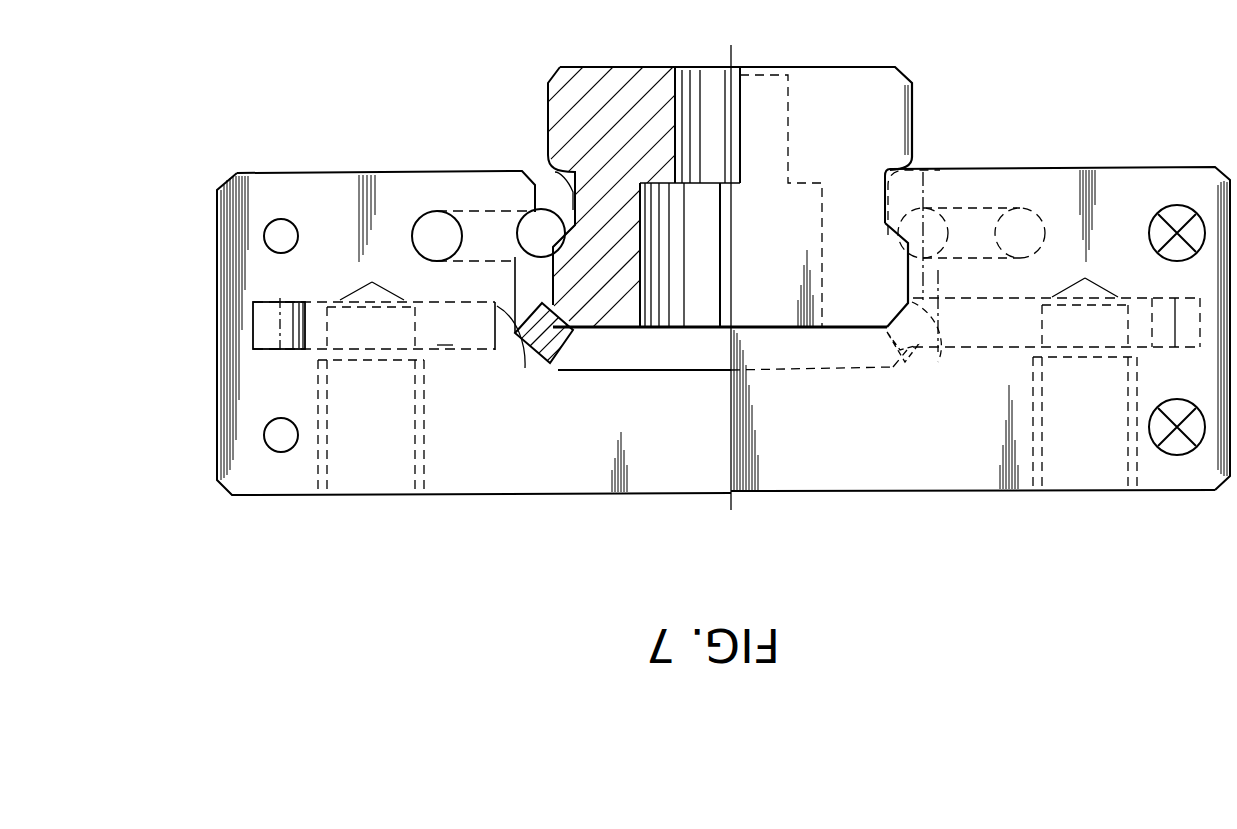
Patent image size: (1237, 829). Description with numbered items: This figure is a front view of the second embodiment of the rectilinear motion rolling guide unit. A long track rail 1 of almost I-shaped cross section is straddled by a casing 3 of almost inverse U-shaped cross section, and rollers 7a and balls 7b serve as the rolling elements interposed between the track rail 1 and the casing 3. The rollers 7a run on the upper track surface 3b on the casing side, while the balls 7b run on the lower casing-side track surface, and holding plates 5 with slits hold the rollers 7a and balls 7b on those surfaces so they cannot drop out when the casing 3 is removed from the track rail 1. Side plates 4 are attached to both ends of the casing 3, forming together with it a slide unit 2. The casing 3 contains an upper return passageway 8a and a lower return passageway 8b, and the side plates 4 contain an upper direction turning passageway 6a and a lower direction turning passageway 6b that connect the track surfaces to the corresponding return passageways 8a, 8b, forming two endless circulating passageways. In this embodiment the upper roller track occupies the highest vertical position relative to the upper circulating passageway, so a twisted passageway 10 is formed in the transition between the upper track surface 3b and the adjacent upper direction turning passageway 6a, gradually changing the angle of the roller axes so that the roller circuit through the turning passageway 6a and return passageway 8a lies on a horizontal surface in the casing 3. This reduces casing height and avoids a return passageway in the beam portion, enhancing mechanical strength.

The track rail 1 is at (862, 107).
The slide unit 2 is at (915, 510).
The casing 3 is at (648, 470).
The upper track surface on the casing side 3b is at (532, 363).
The side plate 4 is at (1120, 187).
The holding plate 5 is at (545, 185).
The upper direction turning passageway 6a is at (453, 347).
The lower direction turning passageway 6b is at (488, 215).
The roller 7a is at (560, 362).
The ball 7b is at (562, 252).
The upper return passageway 8a is at (258, 318).
The lower return passageway 8b is at (425, 215).
The twisted passageway 10 is at (533, 357).